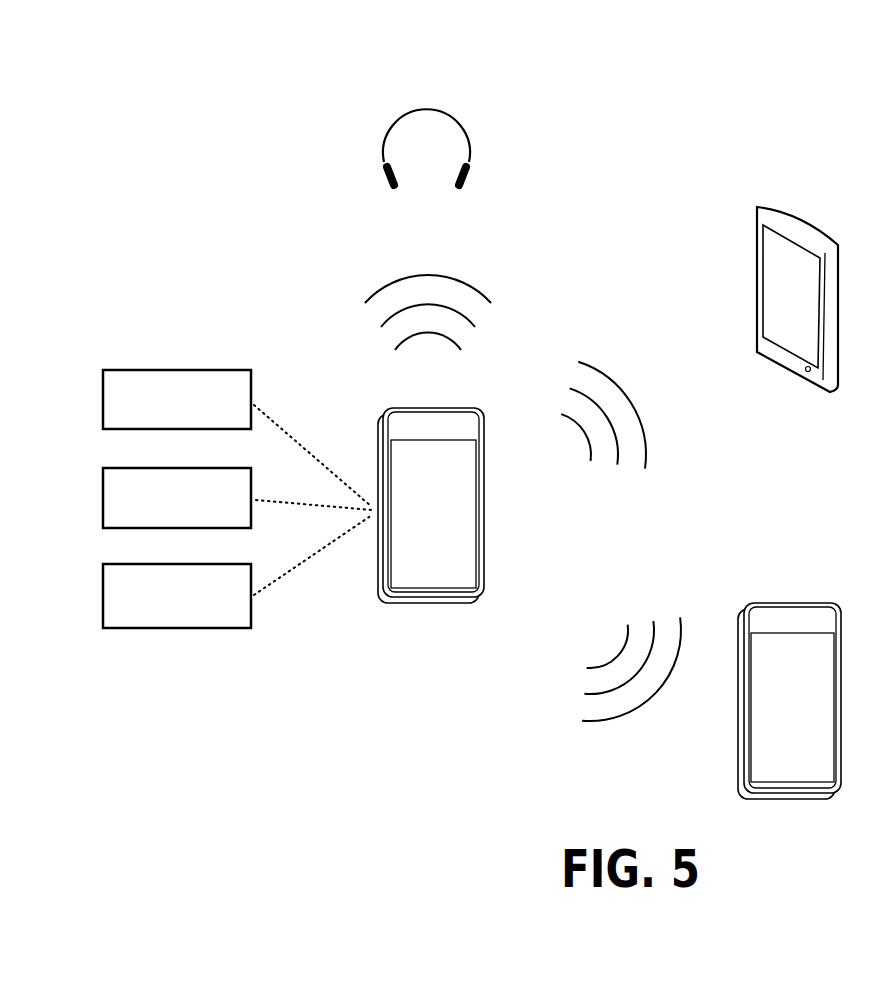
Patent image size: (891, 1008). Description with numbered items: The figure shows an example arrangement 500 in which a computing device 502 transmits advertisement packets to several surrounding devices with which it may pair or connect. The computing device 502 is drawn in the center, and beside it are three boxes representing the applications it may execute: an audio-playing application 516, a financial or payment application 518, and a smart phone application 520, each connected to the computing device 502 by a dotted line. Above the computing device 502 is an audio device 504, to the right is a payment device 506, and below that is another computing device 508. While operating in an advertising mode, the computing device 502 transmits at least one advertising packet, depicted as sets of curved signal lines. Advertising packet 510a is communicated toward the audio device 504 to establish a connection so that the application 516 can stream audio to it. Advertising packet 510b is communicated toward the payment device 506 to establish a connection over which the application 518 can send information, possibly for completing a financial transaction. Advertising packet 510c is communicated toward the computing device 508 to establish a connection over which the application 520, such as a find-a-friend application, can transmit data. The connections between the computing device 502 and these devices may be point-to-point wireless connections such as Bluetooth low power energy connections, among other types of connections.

The system environment 500 is at (97, 73).
The computing device 502 is at (426, 535).
The audio device 504 is at (428, 180).
The payment device 506 is at (779, 328).
The computing device 508 is at (785, 728).
The advertisement packet 510a is at (386, 324).
The advertisement packet 510b is at (567, 390).
The advertisement packet 510c is at (600, 665).
The application 516 is at (237, 438).
The application 518 is at (237, 498).
The application 520 is at (237, 571).